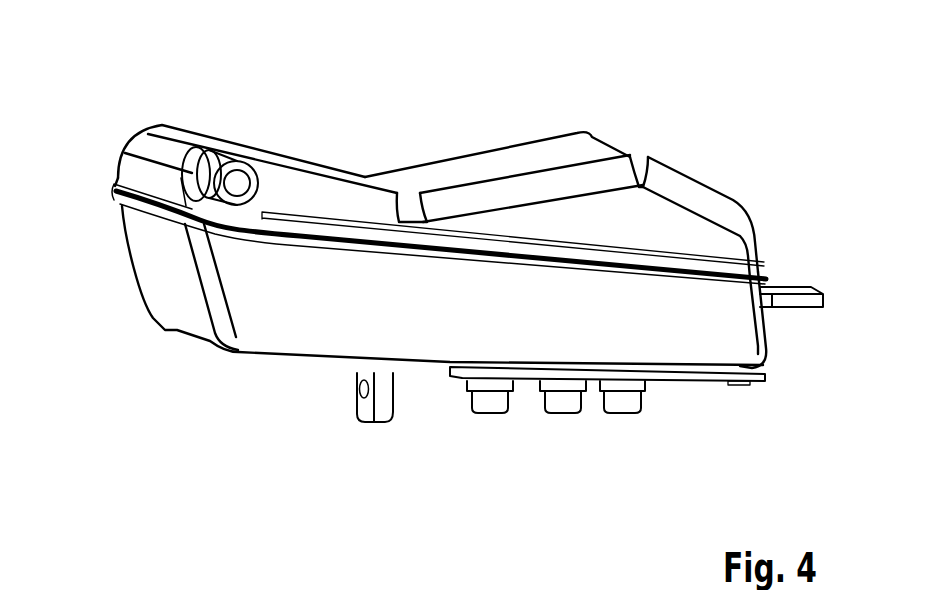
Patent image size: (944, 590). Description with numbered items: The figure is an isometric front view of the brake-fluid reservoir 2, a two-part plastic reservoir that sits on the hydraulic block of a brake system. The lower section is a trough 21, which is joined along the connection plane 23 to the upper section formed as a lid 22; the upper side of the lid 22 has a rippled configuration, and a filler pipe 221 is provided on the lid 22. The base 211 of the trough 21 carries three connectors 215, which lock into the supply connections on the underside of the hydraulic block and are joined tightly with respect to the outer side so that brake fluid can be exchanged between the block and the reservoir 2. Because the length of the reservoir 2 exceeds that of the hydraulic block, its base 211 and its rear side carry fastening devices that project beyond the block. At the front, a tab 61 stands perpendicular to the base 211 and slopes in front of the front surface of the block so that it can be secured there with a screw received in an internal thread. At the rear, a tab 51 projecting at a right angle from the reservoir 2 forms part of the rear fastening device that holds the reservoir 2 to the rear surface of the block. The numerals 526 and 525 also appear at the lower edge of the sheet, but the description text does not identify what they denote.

The brake-fluid reservoir 2 is at (459, 257).
The trough 21 is at (257, 318).
The base 211 is at (418, 378).
The connector 215 is at (493, 410).
The lid 22 is at (504, 174).
The filler pipe 221 is at (202, 167).
The connection plane 23 is at (165, 212).
The tab 51 is at (810, 308).
The tab 61 is at (360, 404).
The element 526 is at (352, 576).
The element 525 is at (505, 583).